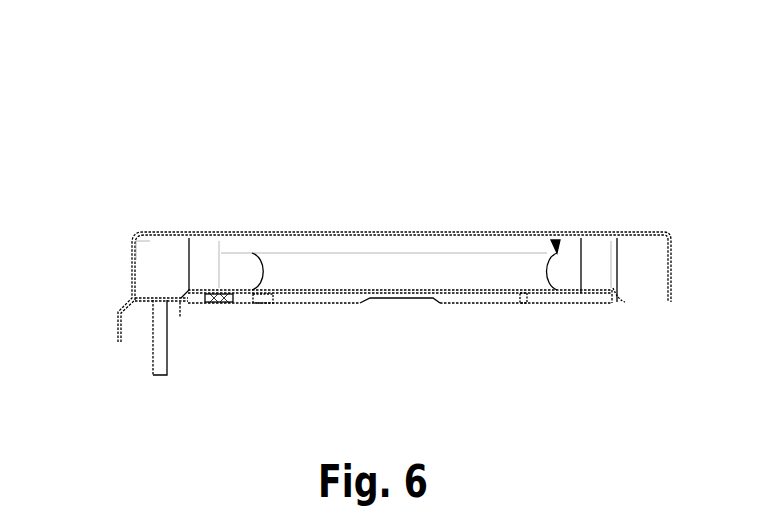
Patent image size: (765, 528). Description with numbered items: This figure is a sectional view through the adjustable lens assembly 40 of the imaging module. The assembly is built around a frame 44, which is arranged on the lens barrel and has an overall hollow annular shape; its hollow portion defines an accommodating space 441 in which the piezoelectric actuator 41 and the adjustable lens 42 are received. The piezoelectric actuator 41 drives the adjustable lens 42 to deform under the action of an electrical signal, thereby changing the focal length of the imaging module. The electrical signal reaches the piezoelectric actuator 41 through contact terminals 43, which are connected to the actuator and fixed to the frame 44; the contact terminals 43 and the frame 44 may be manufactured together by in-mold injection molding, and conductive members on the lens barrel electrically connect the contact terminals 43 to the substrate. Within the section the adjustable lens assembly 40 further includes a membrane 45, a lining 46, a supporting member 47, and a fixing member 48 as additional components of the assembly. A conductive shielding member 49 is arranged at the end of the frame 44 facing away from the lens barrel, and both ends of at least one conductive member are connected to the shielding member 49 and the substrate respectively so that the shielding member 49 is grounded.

The adjustable lens assembly 40 is at (100, 112).
The piezoelectric actuator 41 is at (272, 300).
The adjustable lens 42 is at (376, 262).
The contact terminal 43 is at (163, 360).
The frame 44 is at (638, 300).
The accommodating space 441 is at (553, 238).
The membrane 45 is at (335, 300).
The lining 46 is at (590, 300).
The supporting member 47 is at (294, 246).
The fixing member 48 is at (205, 236).
The shielding member 49 is at (152, 234).